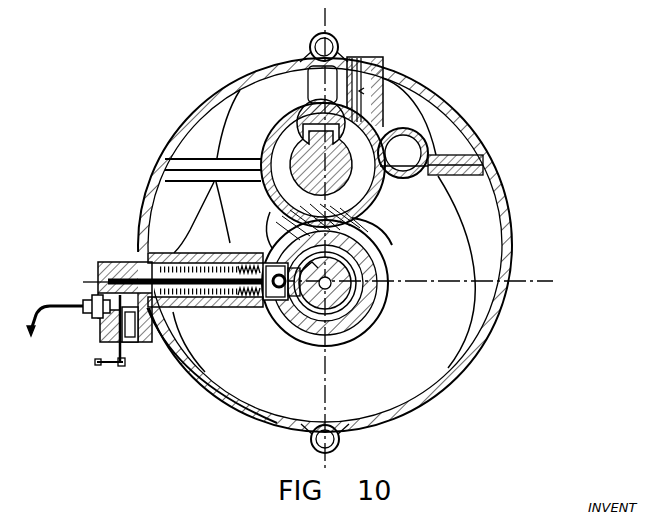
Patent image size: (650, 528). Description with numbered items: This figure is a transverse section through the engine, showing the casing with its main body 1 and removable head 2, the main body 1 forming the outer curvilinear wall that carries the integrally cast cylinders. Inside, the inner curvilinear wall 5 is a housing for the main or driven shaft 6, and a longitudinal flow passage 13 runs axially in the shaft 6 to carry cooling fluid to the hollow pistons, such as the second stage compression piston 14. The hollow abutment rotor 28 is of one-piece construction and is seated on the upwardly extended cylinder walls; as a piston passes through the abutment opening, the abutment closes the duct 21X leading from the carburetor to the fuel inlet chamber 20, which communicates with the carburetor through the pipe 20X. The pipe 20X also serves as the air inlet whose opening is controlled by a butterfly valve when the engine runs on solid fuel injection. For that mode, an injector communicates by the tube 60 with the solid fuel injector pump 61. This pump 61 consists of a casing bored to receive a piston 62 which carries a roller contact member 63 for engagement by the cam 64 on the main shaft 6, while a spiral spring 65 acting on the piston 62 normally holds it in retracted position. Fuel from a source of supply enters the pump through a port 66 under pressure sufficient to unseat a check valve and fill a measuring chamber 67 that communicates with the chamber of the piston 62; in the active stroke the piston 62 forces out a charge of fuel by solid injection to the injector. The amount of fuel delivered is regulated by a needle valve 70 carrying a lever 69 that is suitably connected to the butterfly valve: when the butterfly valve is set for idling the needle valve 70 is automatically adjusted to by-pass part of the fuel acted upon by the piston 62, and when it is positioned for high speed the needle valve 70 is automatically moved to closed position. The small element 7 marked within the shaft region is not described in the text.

The main body 1 is at (510, 254).
The removable head 2 is at (466, 123).
The inner wall 5 is at (366, 270).
The main shaft 6 is at (325, 283).
The key 7 is at (309, 269).
The longitudinal flow passage 13 is at (323, 298).
The second stage compression piston 14 is at (318, 424).
The inlet chamber 20 is at (403, 153).
The pipe 20X is at (390, 79).
The duct 21X is at (358, 155).
The hollow abutment rotor 28 is at (323, 163).
The tube 60 is at (44, 311).
The solid fuel injector pump 61 is at (113, 260).
The piston 62 is at (215, 308).
The roller contact member 63 is at (279, 293).
The cam 64 is at (283, 238).
The spiral spring 65 is at (172, 252).
The port 66 is at (142, 356).
The measuring chamber 67 is at (99, 340).
The lever 69 is at (115, 366).
The needle valve 70 is at (128, 366).